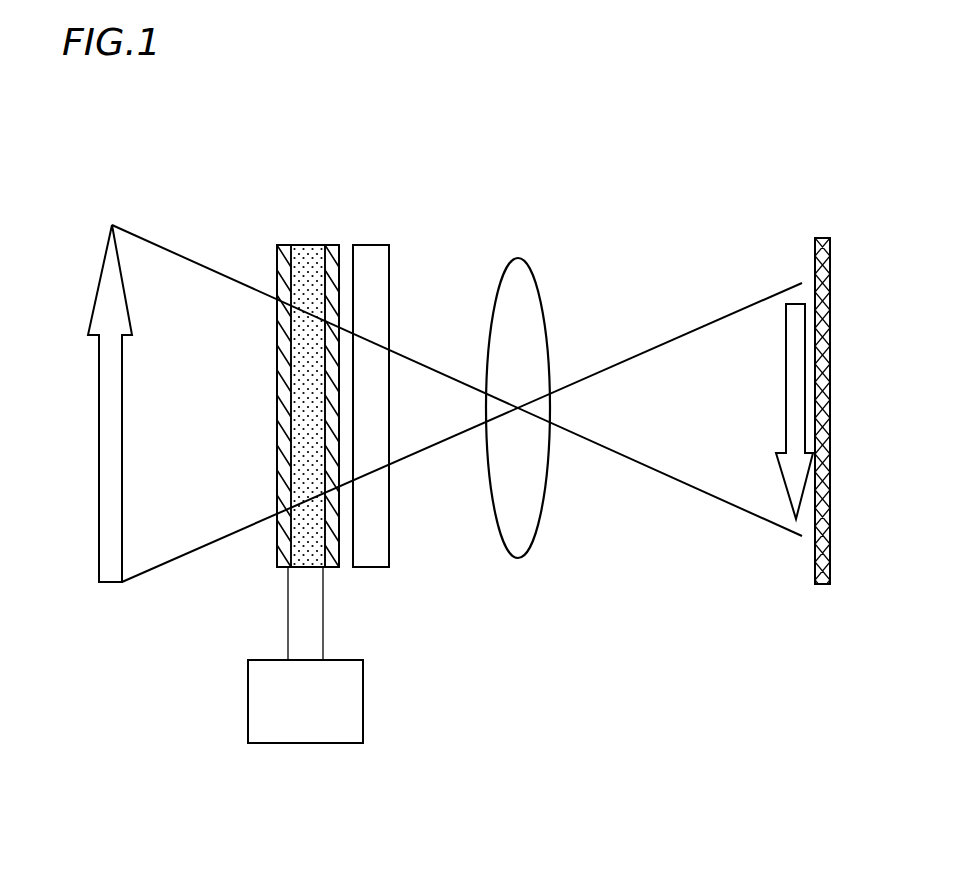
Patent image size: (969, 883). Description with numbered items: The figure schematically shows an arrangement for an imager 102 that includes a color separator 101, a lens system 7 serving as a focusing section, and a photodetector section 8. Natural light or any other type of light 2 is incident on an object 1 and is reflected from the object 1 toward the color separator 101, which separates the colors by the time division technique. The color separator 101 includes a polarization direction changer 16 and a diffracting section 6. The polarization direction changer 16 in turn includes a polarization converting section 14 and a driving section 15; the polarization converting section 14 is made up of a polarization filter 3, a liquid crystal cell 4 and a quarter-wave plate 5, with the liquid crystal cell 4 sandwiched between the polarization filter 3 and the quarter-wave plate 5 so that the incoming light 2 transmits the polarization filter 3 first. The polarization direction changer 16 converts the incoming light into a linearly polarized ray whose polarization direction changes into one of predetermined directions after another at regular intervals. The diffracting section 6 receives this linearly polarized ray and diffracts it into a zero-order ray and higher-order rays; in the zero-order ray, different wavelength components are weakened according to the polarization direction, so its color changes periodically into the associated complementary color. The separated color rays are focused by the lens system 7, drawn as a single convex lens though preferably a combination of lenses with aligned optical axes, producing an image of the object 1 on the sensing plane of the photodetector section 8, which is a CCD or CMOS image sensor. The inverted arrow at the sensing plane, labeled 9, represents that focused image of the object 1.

The object 1 is at (103, 300).
The light 2 is at (224, 538).
The polarization filter 3 is at (283, 245).
The liquid crystal cell 4 is at (308, 245).
The quarter-wave plate 5 is at (340, 370).
The diffracting section 6 is at (372, 250).
The lens system 7 is at (518, 258).
The photodetector section 8 is at (815, 238).
The image 9 is at (792, 376).
The polarization converting section 14 is at (310, 341).
The driving section 15 is at (363, 727).
The polarization direction changer 16 is at (240, 637).
The color separator 101 is at (147, 789).
The imager 102 is at (742, 169).